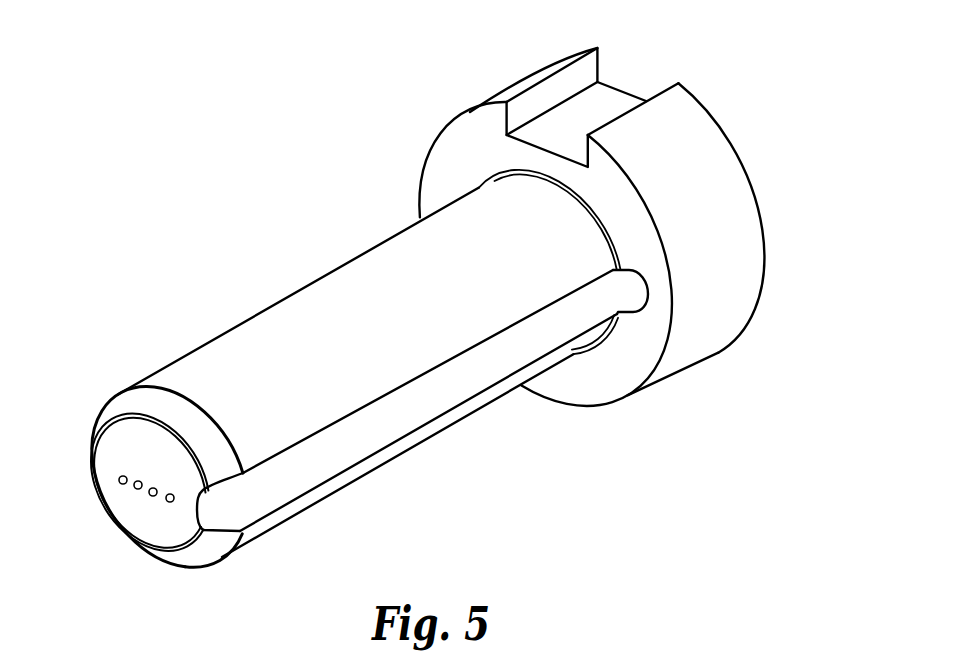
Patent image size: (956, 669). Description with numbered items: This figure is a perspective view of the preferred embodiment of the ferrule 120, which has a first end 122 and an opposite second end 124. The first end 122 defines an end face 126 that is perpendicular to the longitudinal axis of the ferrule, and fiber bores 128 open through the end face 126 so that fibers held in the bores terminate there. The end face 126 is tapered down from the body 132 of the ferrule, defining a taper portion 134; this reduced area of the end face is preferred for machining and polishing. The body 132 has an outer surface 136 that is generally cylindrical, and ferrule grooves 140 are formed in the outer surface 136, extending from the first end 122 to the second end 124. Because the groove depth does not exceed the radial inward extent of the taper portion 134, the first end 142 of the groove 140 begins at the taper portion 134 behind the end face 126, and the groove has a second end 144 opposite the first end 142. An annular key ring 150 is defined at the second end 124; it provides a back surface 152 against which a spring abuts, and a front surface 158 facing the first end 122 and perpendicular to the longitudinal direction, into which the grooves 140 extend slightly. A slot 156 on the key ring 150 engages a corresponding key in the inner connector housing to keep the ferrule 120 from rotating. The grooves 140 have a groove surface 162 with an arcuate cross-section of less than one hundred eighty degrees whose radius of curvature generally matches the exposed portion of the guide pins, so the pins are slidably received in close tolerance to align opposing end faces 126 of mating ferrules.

The ferrule 120 is at (490, 440).
The first end 122 is at (218, 545).
The second end 124 is at (490, 177).
The end face 126 is at (165, 545).
The fiber bores 128 is at (170, 502).
The body 132 is at (180, 372).
The taper portion 134 is at (117, 403).
The outer surface 136 is at (348, 300).
The ferrule grooves 140 is at (363, 443).
The first end of groove 142 is at (252, 497).
The second end of groove 144 is at (548, 342).
The annular key ring 150 is at (717, 327).
The back surface 152 is at (713, 172).
The slot 156 is at (585, 72).
The front surface 158 is at (620, 383).
The groove surface 162 is at (323, 447).